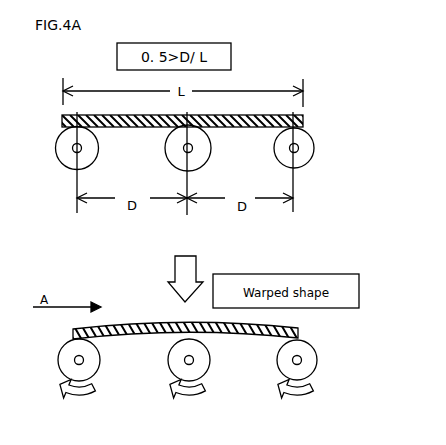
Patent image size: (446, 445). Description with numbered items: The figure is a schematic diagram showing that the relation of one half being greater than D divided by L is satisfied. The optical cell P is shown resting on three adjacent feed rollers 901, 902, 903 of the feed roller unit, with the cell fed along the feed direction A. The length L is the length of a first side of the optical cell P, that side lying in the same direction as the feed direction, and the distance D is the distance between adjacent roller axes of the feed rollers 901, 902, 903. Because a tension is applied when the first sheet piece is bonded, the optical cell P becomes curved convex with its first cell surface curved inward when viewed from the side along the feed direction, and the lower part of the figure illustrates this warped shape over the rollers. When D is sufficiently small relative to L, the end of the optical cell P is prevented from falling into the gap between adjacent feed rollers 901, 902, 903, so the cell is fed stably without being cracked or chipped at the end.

The feed roller 901 is at (80, 167).
The feed roller 902 is at (196, 168).
The feed roller 903 is at (302, 165).
The optical cell P is at (303, 115).